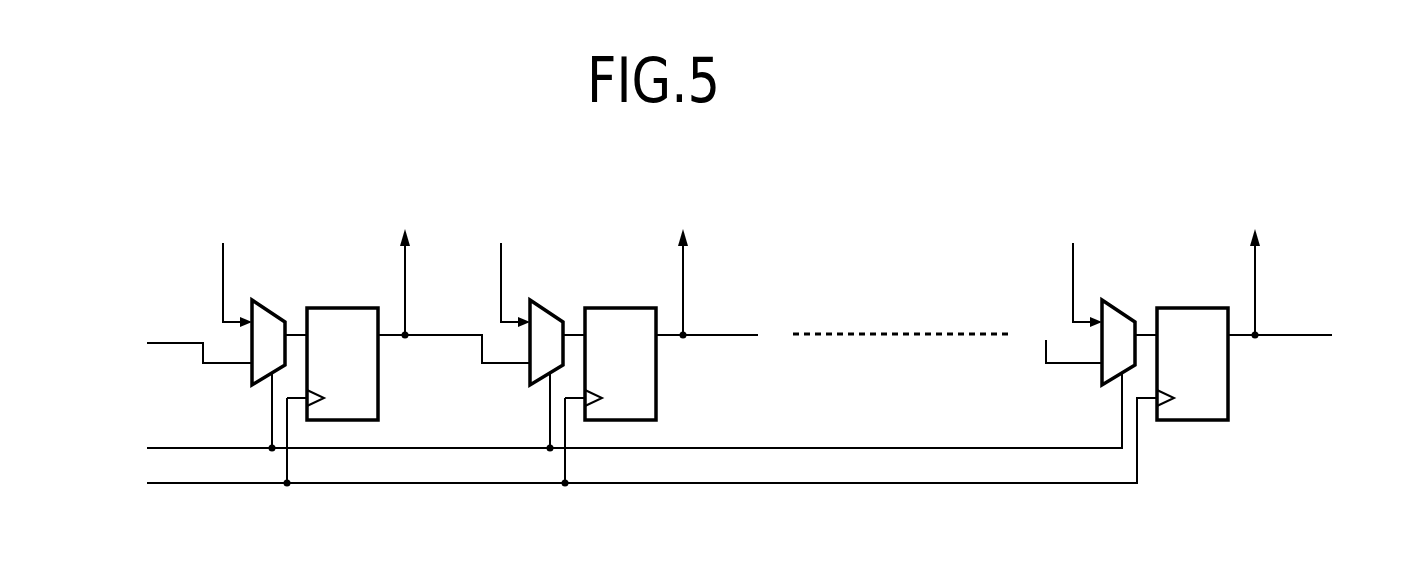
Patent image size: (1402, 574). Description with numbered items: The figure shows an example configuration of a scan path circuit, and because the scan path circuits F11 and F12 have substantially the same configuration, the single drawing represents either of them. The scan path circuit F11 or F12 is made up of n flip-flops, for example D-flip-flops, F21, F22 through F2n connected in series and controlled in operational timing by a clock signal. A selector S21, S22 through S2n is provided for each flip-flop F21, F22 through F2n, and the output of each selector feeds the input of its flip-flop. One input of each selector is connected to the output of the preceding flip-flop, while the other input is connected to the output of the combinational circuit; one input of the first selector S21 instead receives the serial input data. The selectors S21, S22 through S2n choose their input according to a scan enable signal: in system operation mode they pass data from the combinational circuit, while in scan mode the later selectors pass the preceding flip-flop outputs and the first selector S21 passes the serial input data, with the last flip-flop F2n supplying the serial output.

The scan path circuit F11 is at (240, 167).
The scan path circuit F12 is at (337, 167).
The first selector S21 is at (270, 312).
The selector S22 is at (548, 312).
The selector S2n is at (1120, 312).
The flip-flop F21 is at (378, 402).
The flip-flop F22 is at (656, 402).
The flip-flop F2n is at (1228, 402).